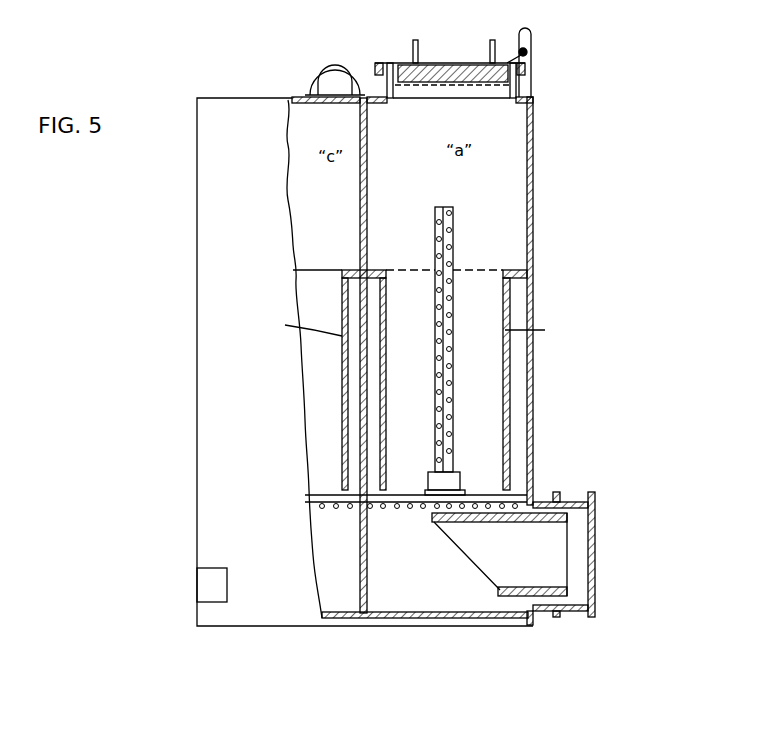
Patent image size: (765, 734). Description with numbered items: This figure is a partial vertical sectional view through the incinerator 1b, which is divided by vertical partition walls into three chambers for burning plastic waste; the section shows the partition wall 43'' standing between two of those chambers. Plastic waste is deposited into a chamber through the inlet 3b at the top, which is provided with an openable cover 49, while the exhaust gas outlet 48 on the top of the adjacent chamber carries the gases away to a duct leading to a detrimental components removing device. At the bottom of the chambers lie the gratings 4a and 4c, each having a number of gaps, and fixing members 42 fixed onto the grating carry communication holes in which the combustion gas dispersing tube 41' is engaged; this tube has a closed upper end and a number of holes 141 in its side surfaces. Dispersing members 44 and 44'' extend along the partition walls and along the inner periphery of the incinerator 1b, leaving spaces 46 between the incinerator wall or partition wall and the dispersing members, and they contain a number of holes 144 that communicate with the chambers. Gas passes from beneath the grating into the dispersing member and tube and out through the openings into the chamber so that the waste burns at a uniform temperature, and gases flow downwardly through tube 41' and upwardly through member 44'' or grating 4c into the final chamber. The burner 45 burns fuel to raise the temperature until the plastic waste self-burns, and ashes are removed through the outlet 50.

The exhaust gas outlet 48 is at (334, 68).
The inlet 3b is at (455, 80).
The openable cover 49 is at (472, 68).
The vertical partition wall 43'' is at (380, 355).
The incinerator 1b is at (535, 216).
The dispersing member 44 is at (454, 363).
The dispersing member 44'' is at (308, 384).
The holes 144 is at (417, 328).
The space 46 is at (520, 378).
The combustion gas dispersing tube 41' is at (461, 339).
The holes 141 is at (451, 264).
The fixing member 42 is at (460, 478).
The grating 4c is at (320, 505).
The grating 4a is at (395, 505).
The burner 45 is at (540, 553).
The outlet for ashes 50 is at (210, 590).